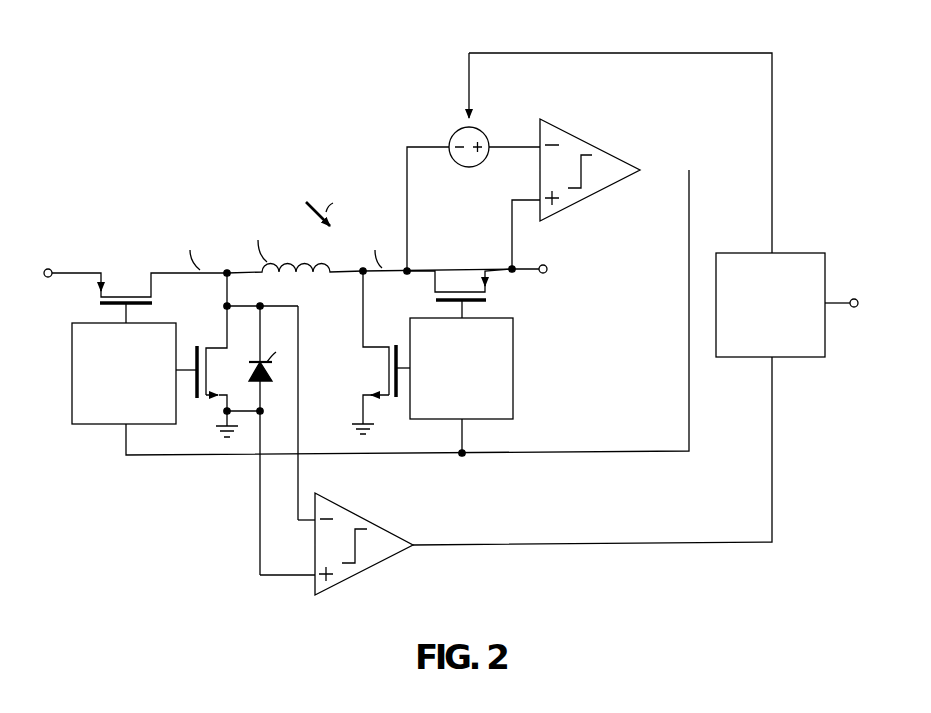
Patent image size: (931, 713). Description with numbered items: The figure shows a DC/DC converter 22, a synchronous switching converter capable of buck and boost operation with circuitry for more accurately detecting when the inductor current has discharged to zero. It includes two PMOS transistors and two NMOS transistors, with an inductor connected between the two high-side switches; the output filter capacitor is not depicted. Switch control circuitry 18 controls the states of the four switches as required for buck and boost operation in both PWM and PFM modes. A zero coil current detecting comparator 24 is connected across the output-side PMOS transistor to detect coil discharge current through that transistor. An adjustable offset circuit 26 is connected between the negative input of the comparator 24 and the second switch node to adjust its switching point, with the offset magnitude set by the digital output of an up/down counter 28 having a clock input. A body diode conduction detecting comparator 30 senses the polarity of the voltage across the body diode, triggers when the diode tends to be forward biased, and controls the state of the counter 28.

The switch control circuitry 18 is at (72, 393).
The DC/DC converter 22 is at (194, 114).
The zero coil current detecting comparator 24 is at (620, 158).
The adjustable offset circuit 26 is at (455, 130).
The up/down counter 28 is at (788, 253).
The body diode conduction detecting comparator 30 is at (358, 511).